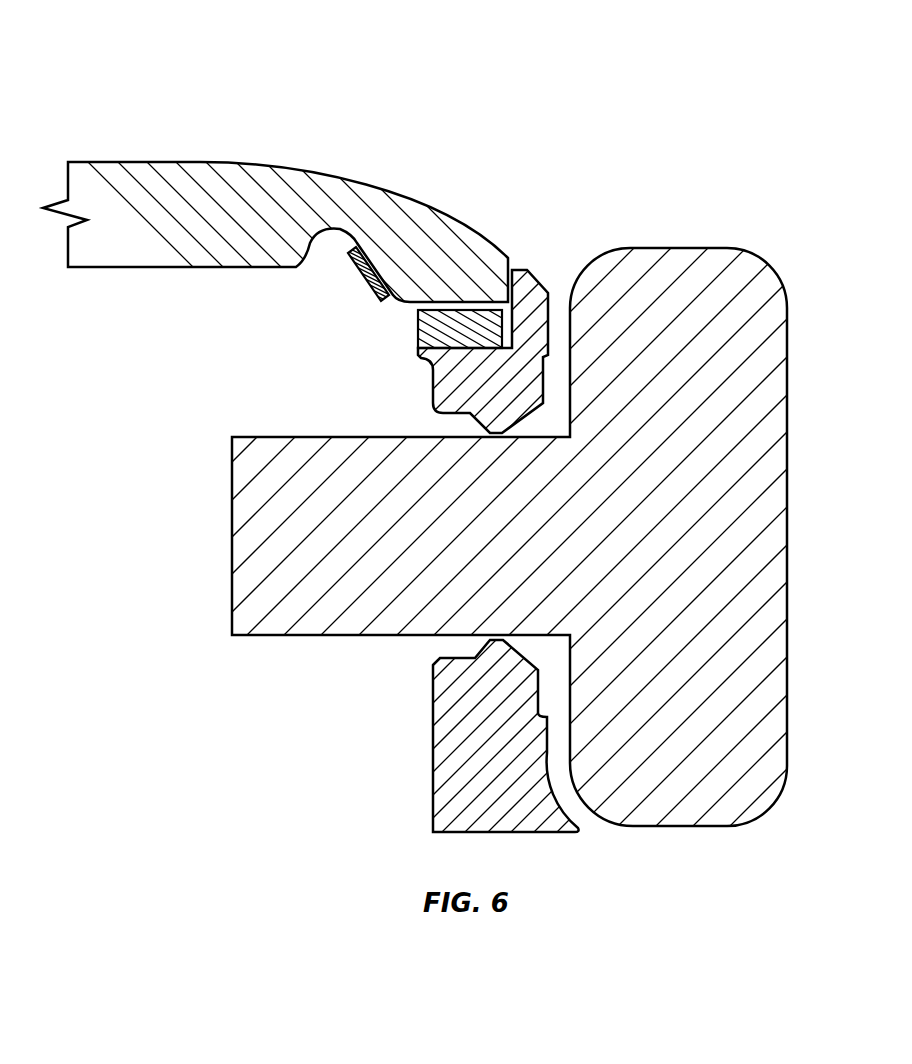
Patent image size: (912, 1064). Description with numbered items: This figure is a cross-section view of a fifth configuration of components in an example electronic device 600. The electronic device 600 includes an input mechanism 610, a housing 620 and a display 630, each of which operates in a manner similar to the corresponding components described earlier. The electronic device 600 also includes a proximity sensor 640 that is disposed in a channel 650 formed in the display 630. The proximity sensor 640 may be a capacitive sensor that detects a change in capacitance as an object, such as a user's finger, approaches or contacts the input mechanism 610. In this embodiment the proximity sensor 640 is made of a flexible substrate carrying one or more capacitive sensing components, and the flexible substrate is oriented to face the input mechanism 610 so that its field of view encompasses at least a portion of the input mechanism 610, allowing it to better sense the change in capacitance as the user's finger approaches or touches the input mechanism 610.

The electronic device 600 is at (67, 78).
The input mechanism 610 is at (668, 248).
The housing 620 is at (514, 268).
The display 630 is at (153, 162).
The proximity sensor 640 is at (369, 283).
The channel 650 is at (323, 234).